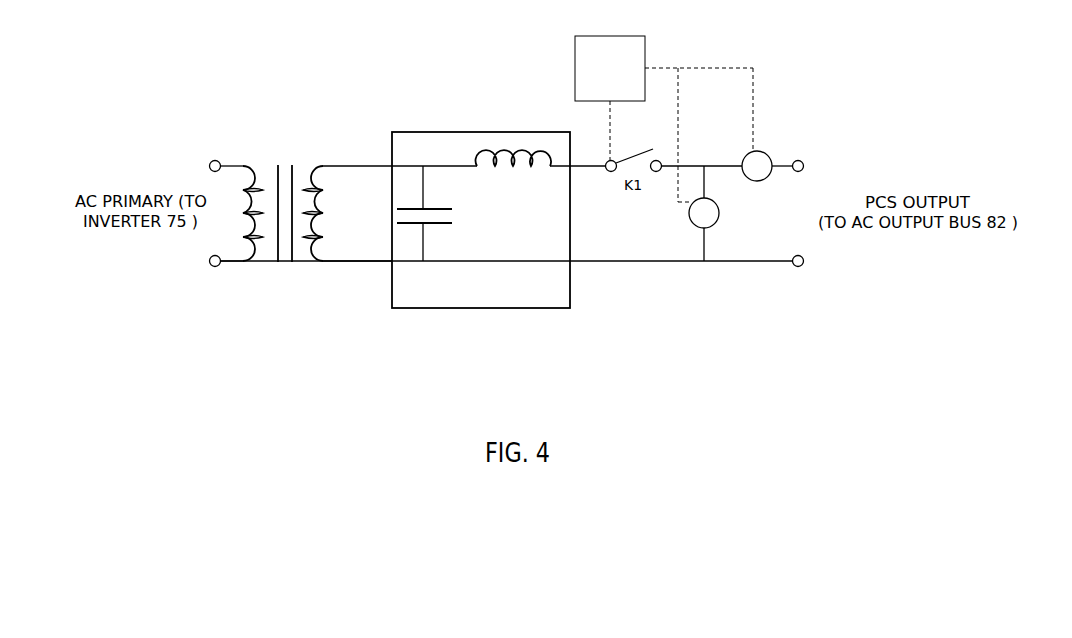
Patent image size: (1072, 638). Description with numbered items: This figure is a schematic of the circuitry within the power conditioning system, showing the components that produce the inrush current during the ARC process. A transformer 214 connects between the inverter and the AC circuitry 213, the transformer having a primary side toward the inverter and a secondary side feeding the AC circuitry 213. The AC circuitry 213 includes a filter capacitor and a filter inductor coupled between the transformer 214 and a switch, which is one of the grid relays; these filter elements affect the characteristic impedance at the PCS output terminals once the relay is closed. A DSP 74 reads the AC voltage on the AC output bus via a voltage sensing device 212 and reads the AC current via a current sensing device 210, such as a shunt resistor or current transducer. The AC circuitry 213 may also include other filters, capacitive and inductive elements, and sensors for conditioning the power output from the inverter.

The transformer 214 is at (245, 162).
The AC circuitry 213 is at (482, 131).
The DSP 74 is at (620, 86).
The current sensing device 210 is at (770, 156).
The voltage sensing device 212 is at (715, 220).